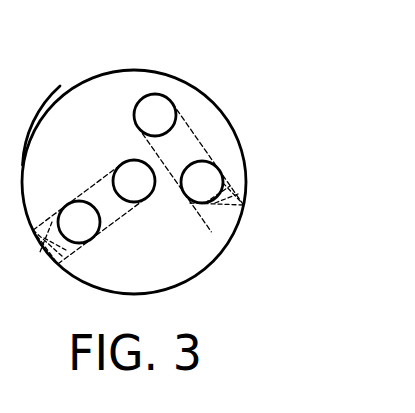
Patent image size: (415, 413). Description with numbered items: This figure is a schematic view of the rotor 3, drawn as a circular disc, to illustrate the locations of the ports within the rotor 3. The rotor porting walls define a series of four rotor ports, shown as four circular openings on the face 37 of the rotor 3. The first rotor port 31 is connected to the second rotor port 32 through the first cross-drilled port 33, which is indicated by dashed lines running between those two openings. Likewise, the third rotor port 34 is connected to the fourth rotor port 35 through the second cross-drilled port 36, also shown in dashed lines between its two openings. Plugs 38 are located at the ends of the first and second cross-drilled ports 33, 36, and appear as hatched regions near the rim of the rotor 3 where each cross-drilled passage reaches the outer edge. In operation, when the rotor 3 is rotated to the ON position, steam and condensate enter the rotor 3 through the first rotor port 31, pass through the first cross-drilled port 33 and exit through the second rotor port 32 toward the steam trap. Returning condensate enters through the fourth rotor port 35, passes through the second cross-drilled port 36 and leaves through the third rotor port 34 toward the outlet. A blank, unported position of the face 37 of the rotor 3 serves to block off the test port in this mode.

The rotor 3 is at (190, 85).
The first rotor port 31 is at (78, 223).
The second rotor port 32 is at (135, 183).
The first cross-drilled port 33 is at (88, 190).
The third rotor port 34 is at (157, 115).
The fourth rotor port 35 is at (202, 183).
The second cross-drilled port 36 is at (158, 152).
The face 37 is at (57, 120).
The plugs 38 is at (48, 250).